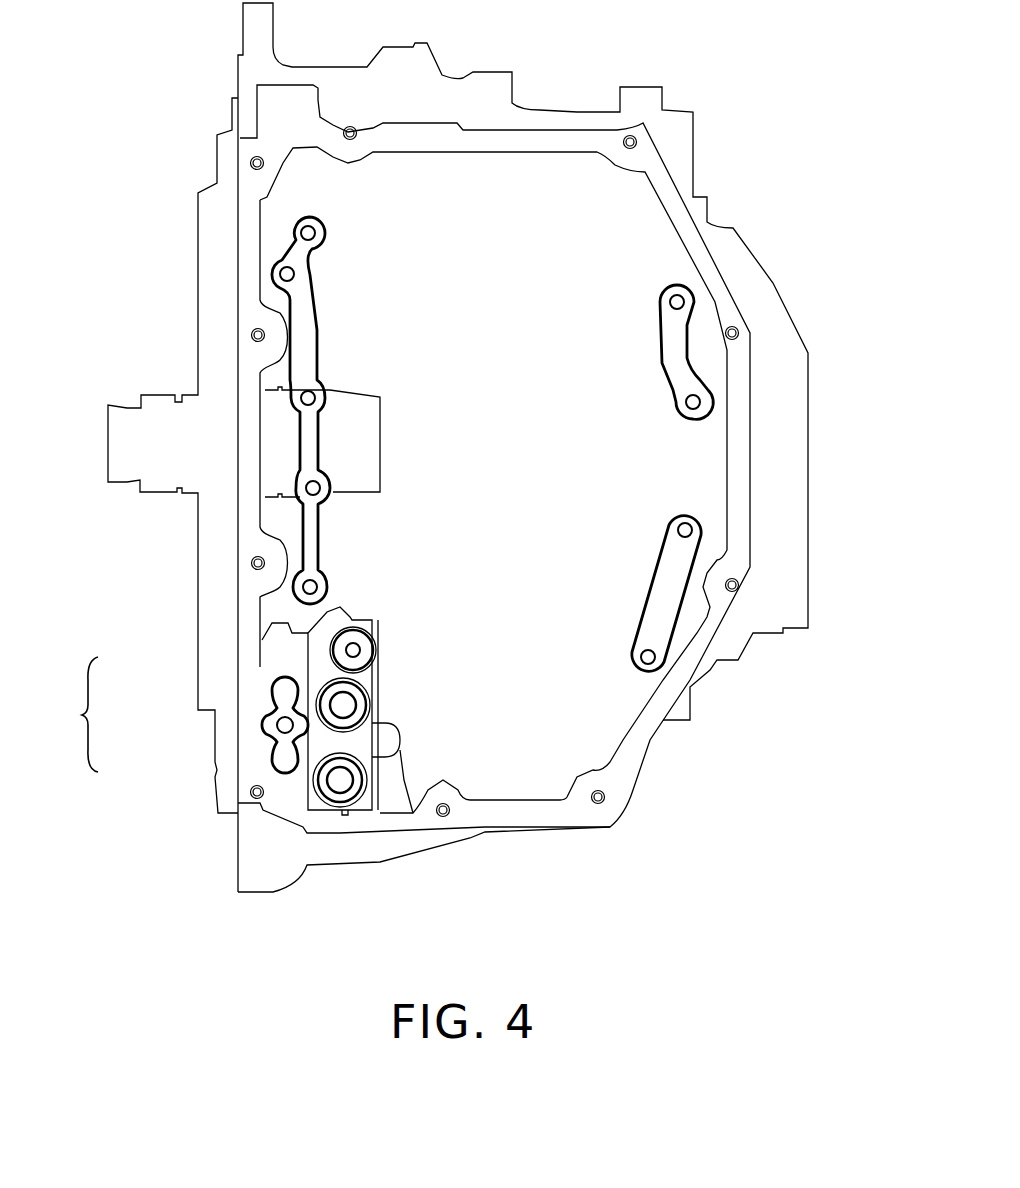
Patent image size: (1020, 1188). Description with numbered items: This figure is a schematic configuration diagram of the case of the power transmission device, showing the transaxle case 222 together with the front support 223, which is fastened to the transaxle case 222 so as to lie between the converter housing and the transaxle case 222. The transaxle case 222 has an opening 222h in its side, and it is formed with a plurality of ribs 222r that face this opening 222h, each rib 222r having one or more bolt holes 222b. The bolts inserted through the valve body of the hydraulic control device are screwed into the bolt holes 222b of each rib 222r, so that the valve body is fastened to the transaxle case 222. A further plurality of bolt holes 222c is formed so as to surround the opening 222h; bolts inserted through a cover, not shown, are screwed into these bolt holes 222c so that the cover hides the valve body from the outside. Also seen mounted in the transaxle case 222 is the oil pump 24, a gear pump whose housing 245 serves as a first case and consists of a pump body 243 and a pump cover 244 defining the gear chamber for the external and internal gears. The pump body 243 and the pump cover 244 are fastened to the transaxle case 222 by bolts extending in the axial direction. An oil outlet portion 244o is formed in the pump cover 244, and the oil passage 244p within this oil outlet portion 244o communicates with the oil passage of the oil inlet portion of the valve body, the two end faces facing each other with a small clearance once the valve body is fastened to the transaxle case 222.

The transaxle case 222 is at (698, 168).
The bolt holes 222b is at (294, 273).
The bolt holes 222c is at (263, 163).
The opening 222h is at (530, 471).
The ribs 222r is at (303, 338).
The front support 223 is at (207, 255).
The oil pump 24 is at (380, 654).
The pump body 243 is at (283, 655).
The pump cover 244 is at (376, 718).
The oil outlet portion 244o is at (318, 733).
The oil passage 244p is at (346, 705).
The housing 245 is at (58, 714).